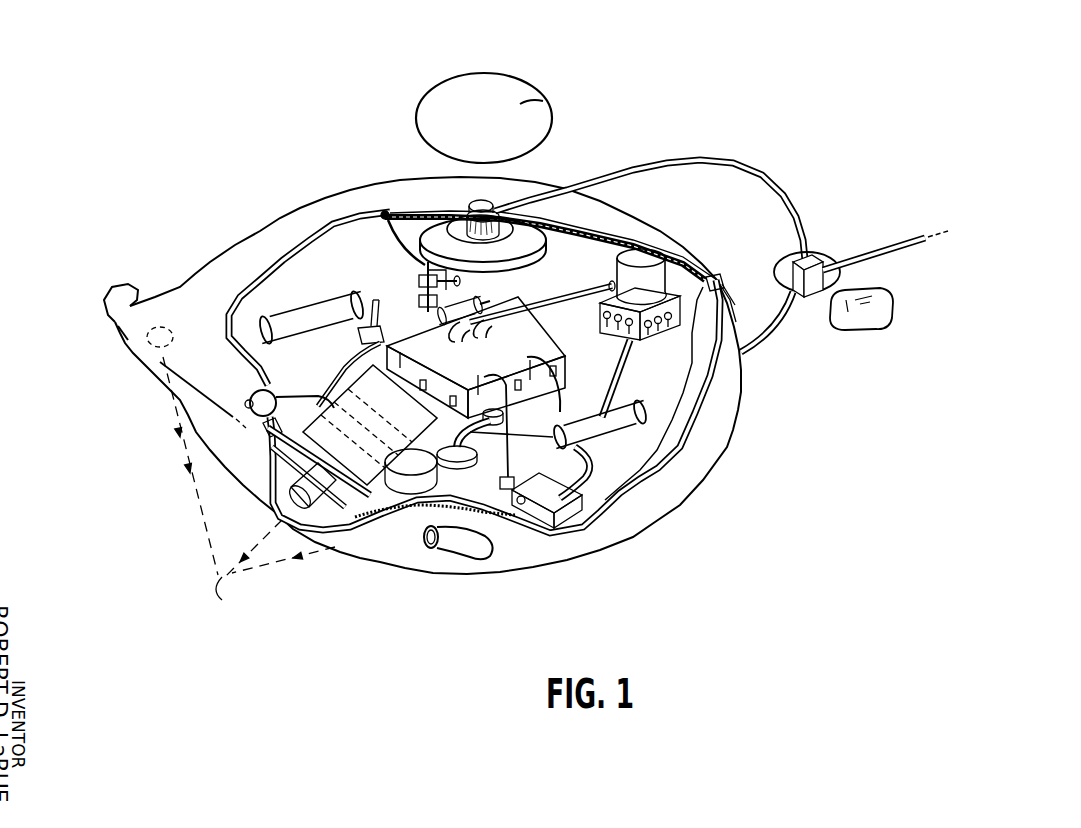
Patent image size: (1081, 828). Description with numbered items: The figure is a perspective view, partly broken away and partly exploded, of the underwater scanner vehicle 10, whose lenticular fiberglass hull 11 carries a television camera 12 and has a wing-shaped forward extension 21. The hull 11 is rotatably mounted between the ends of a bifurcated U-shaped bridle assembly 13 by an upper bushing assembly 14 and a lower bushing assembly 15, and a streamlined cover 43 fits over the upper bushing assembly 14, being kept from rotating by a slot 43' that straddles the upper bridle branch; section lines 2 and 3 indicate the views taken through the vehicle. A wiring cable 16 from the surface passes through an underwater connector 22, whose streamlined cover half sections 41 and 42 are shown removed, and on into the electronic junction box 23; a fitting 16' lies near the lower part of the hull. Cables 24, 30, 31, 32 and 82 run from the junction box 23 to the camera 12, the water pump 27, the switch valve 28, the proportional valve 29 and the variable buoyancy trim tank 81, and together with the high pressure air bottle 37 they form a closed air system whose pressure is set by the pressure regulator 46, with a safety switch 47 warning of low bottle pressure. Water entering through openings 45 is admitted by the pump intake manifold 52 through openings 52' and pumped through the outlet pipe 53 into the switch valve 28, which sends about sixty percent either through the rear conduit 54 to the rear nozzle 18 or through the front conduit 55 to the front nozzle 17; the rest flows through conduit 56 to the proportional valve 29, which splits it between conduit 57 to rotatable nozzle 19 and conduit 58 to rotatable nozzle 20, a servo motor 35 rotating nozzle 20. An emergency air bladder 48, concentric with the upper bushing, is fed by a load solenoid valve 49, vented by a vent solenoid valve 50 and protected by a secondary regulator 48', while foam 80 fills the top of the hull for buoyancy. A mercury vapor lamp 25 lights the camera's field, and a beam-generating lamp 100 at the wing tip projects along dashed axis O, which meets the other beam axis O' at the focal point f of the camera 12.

The underwater scanner vehicle 10 is at (200, 215).
The hull 11 is at (291, 212).
The television camera 12 is at (381, 406).
The bridle assembly 13 is at (575, 190).
The bushing assembly 14 is at (468, 204).
The bushing assembly 15 is at (469, 480).
The wiring cable 16 is at (885, 244).
The fitting 16' is at (468, 428).
The water nozzle 17 is at (252, 391).
The water nozzle 18 is at (715, 288).
The water nozzle 19 is at (118, 291).
The water nozzle 20 is at (522, 552).
The wing-shaped forward extension 21 is at (133, 357).
The underwater connector 22 is at (814, 262).
The electronic junction box 23 is at (520, 326).
The cable 24 is at (415, 352).
The mercury vapor lamp 25 is at (273, 440).
The water pump 27 is at (652, 260).
The switch valve 28 is at (643, 409).
The proportional valve 29 is at (573, 508).
The cable 30 is at (530, 305).
The cable 31 is at (531, 357).
The cable 32 is at (520, 437).
The servo motor 35 is at (425, 518).
The high pressure air bottle 37 is at (292, 306).
The cover half section 41 is at (775, 260).
The cover half section 42 is at (862, 318).
The streamlined cover 43 is at (479, 115).
The slot 43' is at (555, 110).
The openings 45 is at (385, 211).
The pressure regulator 46 is at (423, 448).
The safety switch 47 is at (359, 337).
The emergency air bladder 48 is at (545, 238).
The secondary regulator 48' is at (401, 242).
The load solenoid valve 49 is at (418, 279).
The vent solenoid valve 50 is at (457, 278).
The pump intake manifold 52 is at (625, 300).
The openings 52' is at (622, 339).
The outlet pipe 53 is at (615, 382).
The rear conduit 54 is at (682, 370).
The front conduit 55 is at (293, 398).
The conduit 56 is at (592, 475).
The conduit 57 is at (376, 480).
The conduit 58 is at (343, 519).
The foam 80 is at (262, 293).
The variable buoyancy trim tank 81 is at (469, 343).
The cable 82 is at (491, 301).
The beam-generating lamp 100 is at (188, 318).
The section line 2- 2 is at (83, 287).
The section line 3- 3 is at (953, 240).
The beam axis O is at (177, 502).
The beam axis O' is at (290, 582).
The focal point f is at (247, 482).